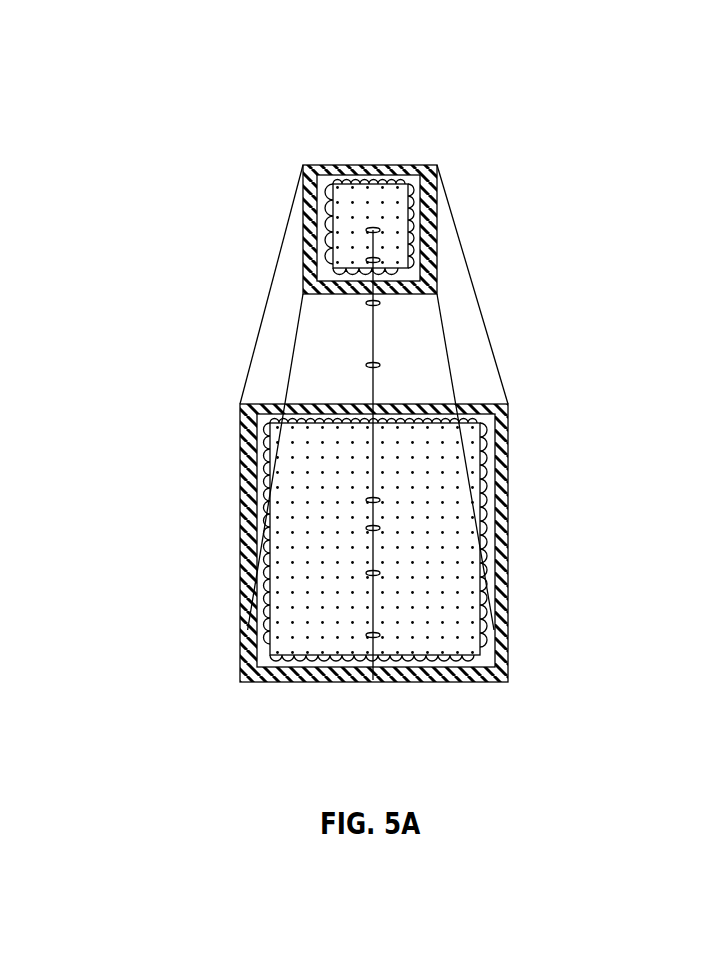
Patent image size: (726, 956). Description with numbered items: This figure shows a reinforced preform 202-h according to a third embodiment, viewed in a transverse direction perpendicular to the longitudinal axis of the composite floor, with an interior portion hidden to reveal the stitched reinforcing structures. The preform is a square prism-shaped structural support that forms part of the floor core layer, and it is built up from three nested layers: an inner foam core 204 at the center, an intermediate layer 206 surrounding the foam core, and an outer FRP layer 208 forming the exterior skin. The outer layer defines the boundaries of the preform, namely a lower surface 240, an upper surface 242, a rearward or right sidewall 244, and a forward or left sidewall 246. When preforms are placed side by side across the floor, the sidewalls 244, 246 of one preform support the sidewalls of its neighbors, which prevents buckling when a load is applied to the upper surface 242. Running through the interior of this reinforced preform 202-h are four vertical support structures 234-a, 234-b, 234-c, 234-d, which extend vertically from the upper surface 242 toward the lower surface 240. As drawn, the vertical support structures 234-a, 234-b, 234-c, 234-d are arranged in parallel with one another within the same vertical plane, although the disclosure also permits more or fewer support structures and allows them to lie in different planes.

The reinforced preform 202-h is at (441, 105).
The inner foam core 204 is at (473, 620).
The intermediate layer 206 is at (502, 672).
The outer FRP layer 208 is at (268, 684).
The vertical support structure 234-a is at (375, 393).
The vertical support structure 234-b is at (375, 342).
The vertical support structure 234-c is at (373, 285).
The vertical support structure 234-d is at (375, 243).
The lower surface 240 is at (466, 708).
The upper surface 242 is at (299, 379).
The rearward sidewall 244 is at (538, 571).
The forward sidewall 246 is at (207, 580).